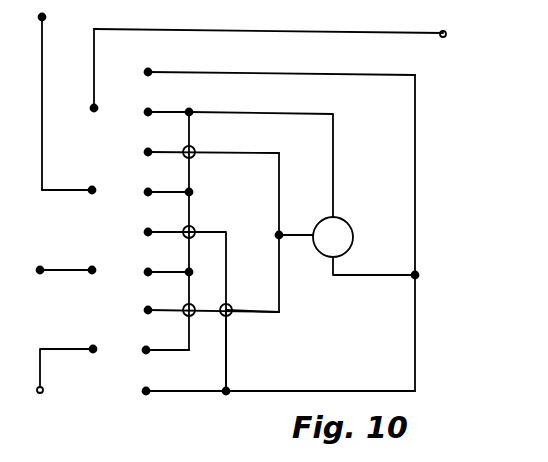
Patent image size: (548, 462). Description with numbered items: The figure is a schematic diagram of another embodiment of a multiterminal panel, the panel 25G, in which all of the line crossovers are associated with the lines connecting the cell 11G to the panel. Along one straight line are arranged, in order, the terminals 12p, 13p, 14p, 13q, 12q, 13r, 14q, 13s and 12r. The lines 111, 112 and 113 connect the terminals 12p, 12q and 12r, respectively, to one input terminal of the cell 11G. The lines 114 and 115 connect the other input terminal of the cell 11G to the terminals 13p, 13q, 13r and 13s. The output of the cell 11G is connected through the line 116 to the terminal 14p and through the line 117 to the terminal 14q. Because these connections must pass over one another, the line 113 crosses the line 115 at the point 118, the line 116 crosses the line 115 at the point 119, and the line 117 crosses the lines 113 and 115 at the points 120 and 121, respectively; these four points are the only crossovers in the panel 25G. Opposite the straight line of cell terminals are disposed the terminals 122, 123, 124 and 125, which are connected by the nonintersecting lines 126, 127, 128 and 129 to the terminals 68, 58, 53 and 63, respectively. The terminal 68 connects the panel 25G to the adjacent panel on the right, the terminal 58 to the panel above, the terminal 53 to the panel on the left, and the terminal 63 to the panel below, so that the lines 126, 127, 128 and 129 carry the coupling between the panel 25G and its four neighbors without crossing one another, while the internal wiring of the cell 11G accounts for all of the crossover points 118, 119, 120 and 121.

The terminal 58 is at (42, 17).
The terminal 68 is at (449, 24).
The line 126 is at (132, 33).
The line 127 is at (42, 86).
The terminal 122 is at (92, 106).
The terminal 123 is at (97, 180).
The terminal 53 is at (40, 268).
The line 128 is at (52, 270).
The terminal 124 is at (92, 272).
The terminal 125 is at (98, 338).
The line 129 is at (42, 378).
The terminal 63 is at (38, 388).
The panel 25G is at (105, 383).
The terminal 12p is at (146, 70).
The terminal 13p is at (147, 110).
The terminal 14p is at (147, 150).
The terminal 13q is at (147, 190).
The terminal 12q is at (147, 230).
The terminal 13r is at (147, 270).
The terminal 14q is at (147, 308).
The terminal 13s is at (145, 348).
The terminal 12r is at (145, 389).
The line 111 is at (311, 71).
The line 112 is at (252, 390).
The line 113 is at (226, 350).
The line 114 is at (250, 112).
The line 115 is at (189, 178).
The line 116 is at (273, 144).
The line 117 is at (279, 312).
The point 118 is at (193, 226).
The point 119 is at (192, 146).
The point 120 is at (230, 305).
The point 121 is at (192, 304).
The cell 11G is at (345, 222).